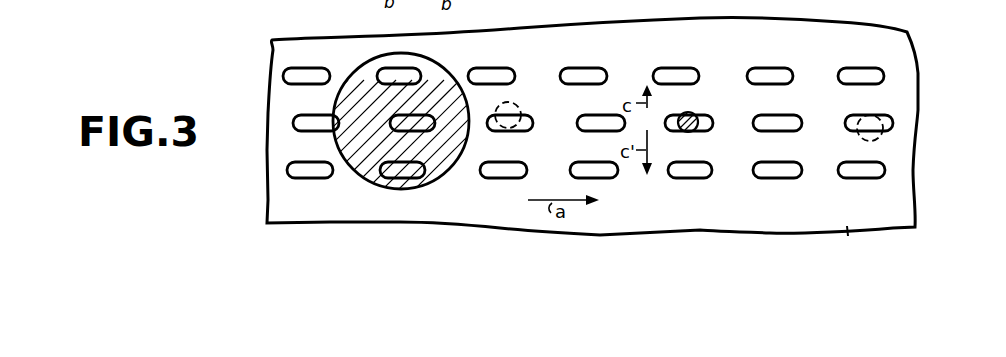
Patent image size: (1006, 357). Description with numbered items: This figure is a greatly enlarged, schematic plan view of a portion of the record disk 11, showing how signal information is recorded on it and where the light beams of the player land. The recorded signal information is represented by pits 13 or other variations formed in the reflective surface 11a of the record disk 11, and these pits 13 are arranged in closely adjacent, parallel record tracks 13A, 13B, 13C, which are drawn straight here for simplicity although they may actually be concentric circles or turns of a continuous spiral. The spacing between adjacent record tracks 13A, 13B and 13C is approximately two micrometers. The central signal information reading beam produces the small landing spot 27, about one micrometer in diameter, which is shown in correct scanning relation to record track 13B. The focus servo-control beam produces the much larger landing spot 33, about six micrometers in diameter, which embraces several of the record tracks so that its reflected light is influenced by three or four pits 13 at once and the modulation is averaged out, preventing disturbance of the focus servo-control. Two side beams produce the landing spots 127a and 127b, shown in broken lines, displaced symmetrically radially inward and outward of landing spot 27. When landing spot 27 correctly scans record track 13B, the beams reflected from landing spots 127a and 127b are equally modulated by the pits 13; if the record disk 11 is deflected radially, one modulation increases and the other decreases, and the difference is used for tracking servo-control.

The record disk 11 is at (752, 230).
The reflective surface 11a is at (848, 233).
The pits 13 is at (757, 75).
The record track 13A is at (887, 76).
The record track 13B is at (897, 125).
The record track 13C is at (888, 170).
The landing spot 27 is at (688, 133).
The landing spot 33 is at (360, 172).
The landing spot 127a is at (518, 101).
The landing spot 127b is at (863, 142).